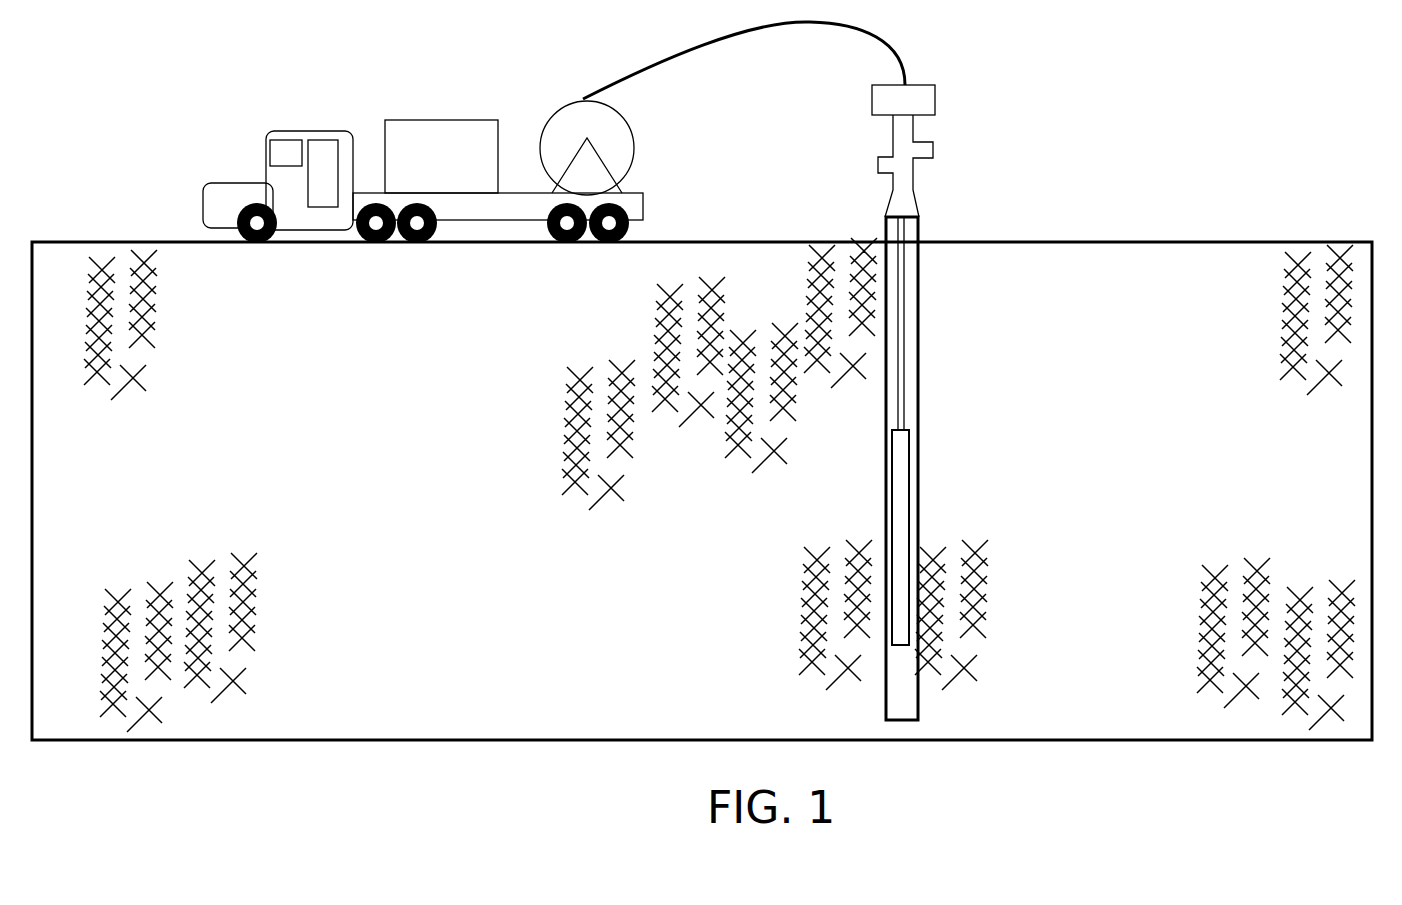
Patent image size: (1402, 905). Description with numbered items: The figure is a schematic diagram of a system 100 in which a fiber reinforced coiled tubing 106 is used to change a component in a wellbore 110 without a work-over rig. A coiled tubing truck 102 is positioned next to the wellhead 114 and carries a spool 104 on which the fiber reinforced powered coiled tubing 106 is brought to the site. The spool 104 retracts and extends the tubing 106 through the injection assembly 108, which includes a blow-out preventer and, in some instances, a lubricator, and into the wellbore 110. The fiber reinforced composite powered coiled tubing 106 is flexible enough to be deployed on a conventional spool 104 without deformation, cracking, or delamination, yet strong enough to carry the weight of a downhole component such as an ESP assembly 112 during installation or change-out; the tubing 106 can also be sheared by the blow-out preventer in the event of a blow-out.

The well system 100 is at (1183, 165).
The coiled tubing truck 102 is at (315, 130).
The spool 104 is at (553, 108).
The fiber reinforced coiled tubing 106 is at (903, 365).
The injection assembly 108 is at (933, 85).
The wellbore 110 is at (918, 503).
The ESP assembly 112 is at (890, 530).
The wellhead 114 is at (917, 178).